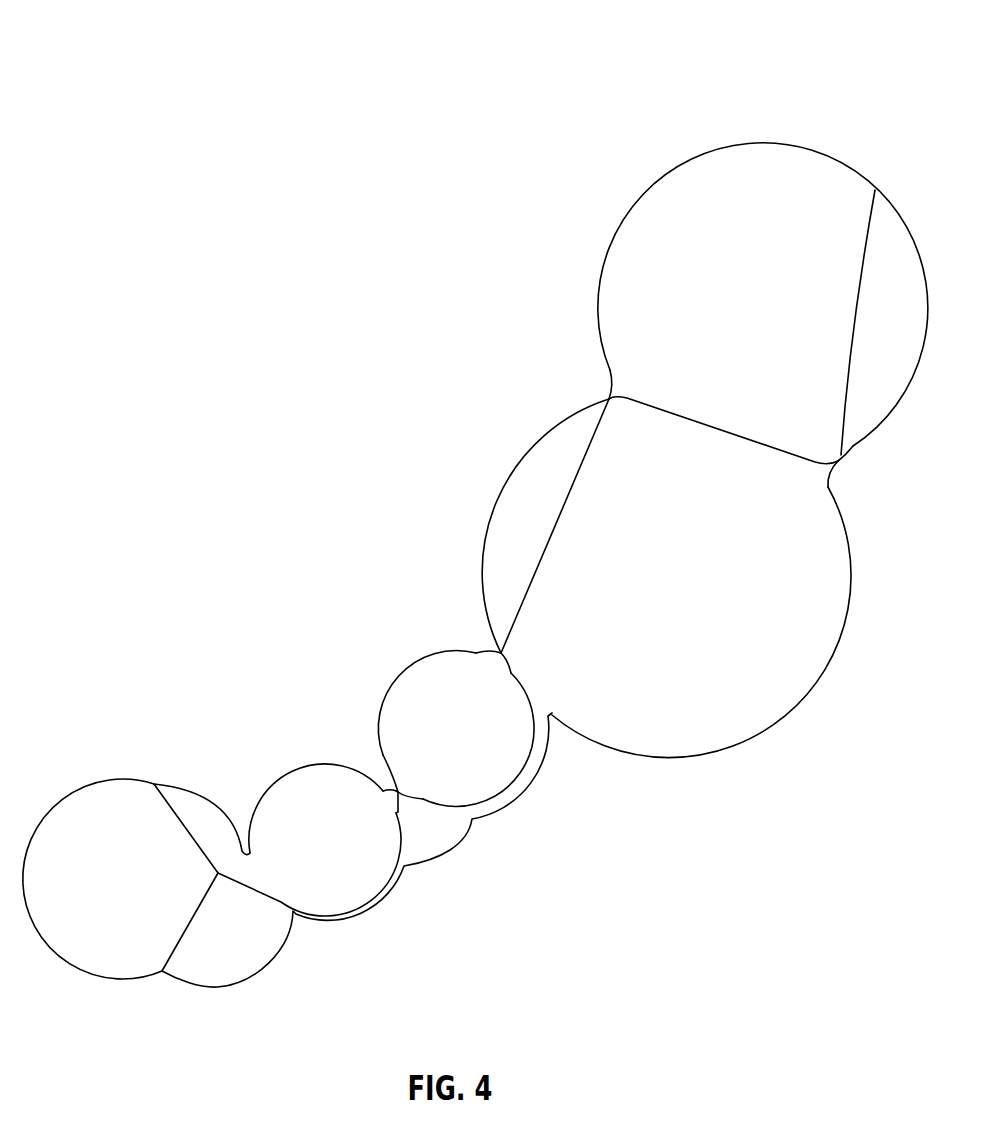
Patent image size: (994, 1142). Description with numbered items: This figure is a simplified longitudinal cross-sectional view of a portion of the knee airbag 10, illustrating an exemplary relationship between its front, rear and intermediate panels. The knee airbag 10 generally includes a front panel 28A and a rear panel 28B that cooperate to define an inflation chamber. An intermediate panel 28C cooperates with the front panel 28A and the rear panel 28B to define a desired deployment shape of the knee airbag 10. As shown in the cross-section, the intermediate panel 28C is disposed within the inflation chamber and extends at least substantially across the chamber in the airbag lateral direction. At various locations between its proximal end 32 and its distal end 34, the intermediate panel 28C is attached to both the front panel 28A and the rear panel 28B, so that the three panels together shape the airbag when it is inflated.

The knee airbag 10 is at (425, 289).
The front panel 28A is at (725, 752).
The rear panel 28B is at (515, 476).
The intermediate panel 28C is at (847, 333).
The proximal end 32 is at (260, 891).
The distal end 34 is at (866, 222).